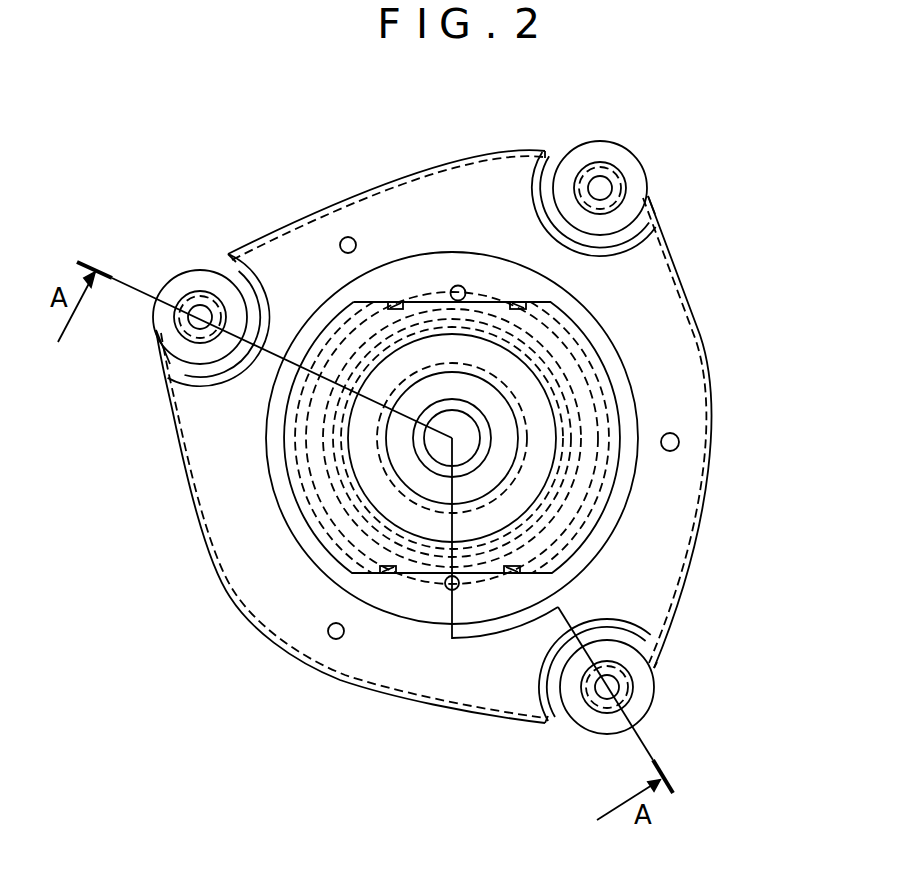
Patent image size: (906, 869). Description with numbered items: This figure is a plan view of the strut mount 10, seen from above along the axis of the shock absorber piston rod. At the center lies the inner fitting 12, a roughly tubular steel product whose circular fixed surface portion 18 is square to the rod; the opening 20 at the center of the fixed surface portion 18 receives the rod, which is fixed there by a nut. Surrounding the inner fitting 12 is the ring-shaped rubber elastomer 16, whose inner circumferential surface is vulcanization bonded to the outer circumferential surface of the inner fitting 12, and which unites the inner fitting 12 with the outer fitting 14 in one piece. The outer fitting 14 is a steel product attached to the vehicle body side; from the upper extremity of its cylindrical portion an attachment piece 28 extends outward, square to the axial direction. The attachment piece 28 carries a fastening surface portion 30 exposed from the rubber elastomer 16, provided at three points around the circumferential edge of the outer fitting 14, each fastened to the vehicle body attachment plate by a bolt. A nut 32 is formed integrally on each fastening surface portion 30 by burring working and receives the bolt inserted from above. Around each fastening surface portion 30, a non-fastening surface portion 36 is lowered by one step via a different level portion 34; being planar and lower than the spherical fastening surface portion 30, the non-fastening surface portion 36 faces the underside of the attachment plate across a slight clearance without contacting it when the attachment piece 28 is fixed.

The strut mount 10 is at (461, 123).
The inner fitting 12 is at (330, 447).
The outer fitting 14 is at (357, 665).
The rubber elastomer 16 is at (600, 524).
The fixed surface portion 18 is at (493, 408).
The opening 20 is at (430, 462).
The attachment piece 28 is at (621, 149).
The fastening surface portion 30 is at (591, 163).
The nut 32 is at (617, 178).
The different level portion 34 is at (650, 214).
The non-fastening surface portion 36 is at (638, 235).